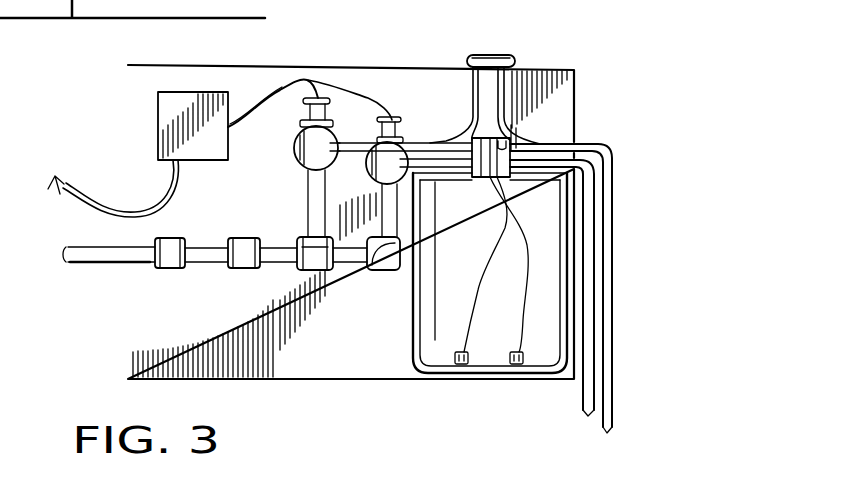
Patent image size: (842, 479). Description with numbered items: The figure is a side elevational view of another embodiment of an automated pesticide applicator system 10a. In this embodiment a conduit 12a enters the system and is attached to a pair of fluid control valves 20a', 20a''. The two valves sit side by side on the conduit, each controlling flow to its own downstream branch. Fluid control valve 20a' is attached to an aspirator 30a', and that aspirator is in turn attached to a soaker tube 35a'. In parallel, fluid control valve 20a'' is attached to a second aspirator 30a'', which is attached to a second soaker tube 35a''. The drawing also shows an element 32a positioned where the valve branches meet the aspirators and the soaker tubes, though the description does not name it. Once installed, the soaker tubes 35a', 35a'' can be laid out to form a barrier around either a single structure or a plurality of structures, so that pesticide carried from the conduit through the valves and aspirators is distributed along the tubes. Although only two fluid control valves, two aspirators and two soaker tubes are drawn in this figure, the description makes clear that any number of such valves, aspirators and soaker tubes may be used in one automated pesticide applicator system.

The automated pesticide applicator system 10a is at (324, 361).
The conduit 12a is at (65, 266).
The fluid control valve 20a' is at (338, 96).
The fluid control valve 20a'' is at (419, 103).
The aspirator 30a' is at (521, 309).
The aspirator 30a'' is at (465, 309).
The bottle/fill assembly 32a is at (490, 88).
The soaker tube 35a' is at (610, 288).
The soaker tube 35a'' is at (611, 288).